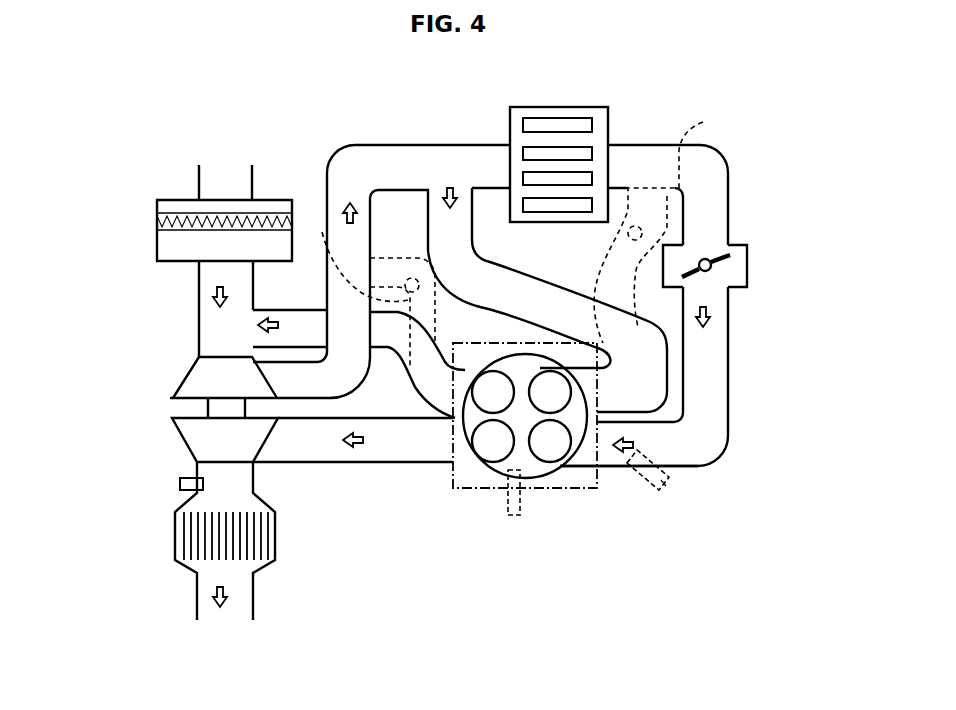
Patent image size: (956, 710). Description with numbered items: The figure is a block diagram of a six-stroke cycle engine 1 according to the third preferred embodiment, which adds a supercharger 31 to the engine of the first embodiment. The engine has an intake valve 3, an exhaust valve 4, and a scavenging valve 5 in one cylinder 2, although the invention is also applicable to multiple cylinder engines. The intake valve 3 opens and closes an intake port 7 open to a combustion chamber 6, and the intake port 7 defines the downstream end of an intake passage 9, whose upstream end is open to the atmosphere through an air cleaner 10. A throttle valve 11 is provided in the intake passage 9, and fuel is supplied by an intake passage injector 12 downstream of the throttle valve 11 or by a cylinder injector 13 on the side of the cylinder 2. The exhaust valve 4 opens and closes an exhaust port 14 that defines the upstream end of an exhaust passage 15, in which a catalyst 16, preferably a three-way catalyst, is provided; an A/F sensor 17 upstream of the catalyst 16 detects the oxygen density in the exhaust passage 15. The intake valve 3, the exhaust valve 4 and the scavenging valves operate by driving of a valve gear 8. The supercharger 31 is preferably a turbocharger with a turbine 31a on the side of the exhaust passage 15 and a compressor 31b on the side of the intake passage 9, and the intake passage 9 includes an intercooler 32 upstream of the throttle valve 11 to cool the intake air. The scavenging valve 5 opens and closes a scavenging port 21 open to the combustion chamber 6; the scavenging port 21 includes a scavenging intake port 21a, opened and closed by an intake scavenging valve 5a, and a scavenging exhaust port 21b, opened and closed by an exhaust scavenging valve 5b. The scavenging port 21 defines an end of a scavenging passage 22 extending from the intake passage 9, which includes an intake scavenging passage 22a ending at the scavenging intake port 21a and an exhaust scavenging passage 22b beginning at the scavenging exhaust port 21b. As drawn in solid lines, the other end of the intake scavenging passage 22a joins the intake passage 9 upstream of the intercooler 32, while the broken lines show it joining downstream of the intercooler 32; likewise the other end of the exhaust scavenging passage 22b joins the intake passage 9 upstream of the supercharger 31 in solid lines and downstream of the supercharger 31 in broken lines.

The six-stroke cycle engine 1 is at (104, 152).
The cylinder 2 is at (490, 473).
The intake valve 3 is at (547, 447).
The exhaust valve 4 is at (482, 437).
The scavenging valve 5 is at (517, 247).
The intake scavenging valve 5a is at (548, 392).
The exhaust scavenging valve 5b is at (497, 392).
The combustion chamber 6 is at (525, 478).
The intake port 7 is at (587, 456).
The valve gear 8 is at (496, 486).
The intake passage 9 is at (712, 208).
The air cleaner 10 is at (157, 233).
The throttle valve 11 is at (712, 264).
The intake passage injector 12 is at (667, 490).
The cylinder injector 13 is at (512, 515).
The exhaust port 14 is at (470, 455).
The exhaust passage 15 is at (317, 442).
The catalyst 16 is at (192, 536).
The A/F sensor 17 is at (179, 486).
The scavenging port 21 is at (630, 77).
The scavenging intake port 21a is at (583, 378).
The scavenging exhaust port 21b is at (465, 377).
The scavenging passage 22 is at (293, 104).
The intake scavenging passage 22a is at (448, 250).
The exhaust scavenging passage 22b is at (305, 326).
The supercharger 31 is at (178, 364).
The turbine 31a is at (187, 457).
The compressor 31b is at (183, 390).
The intercooler 32 is at (508, 127).